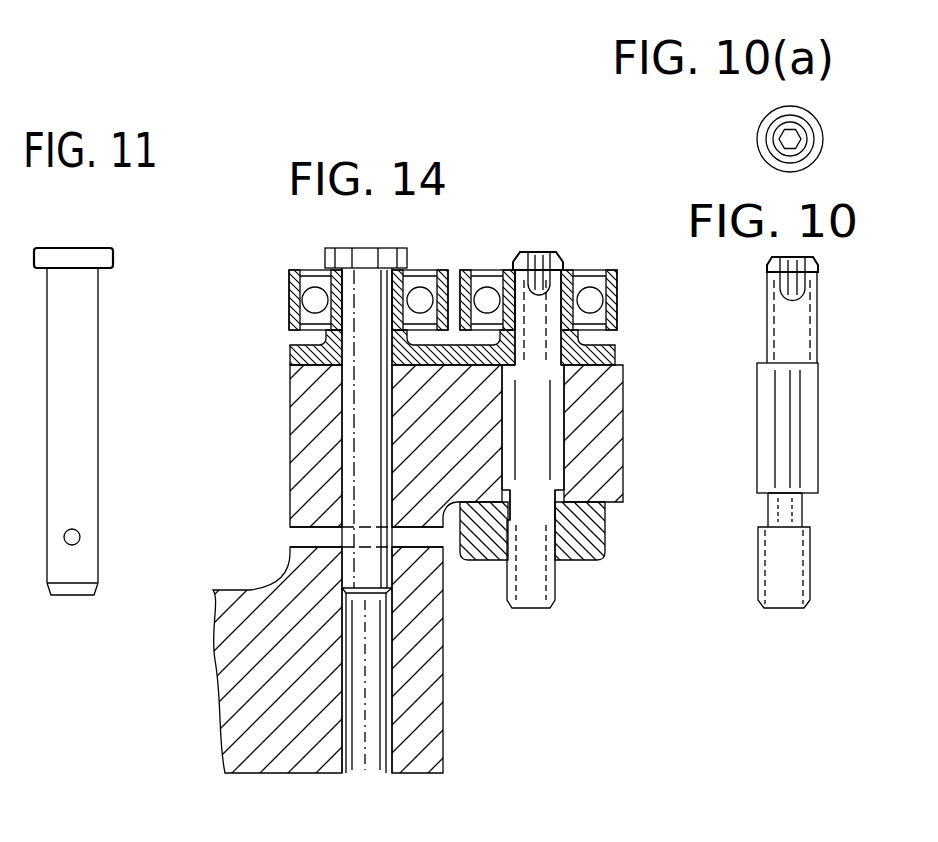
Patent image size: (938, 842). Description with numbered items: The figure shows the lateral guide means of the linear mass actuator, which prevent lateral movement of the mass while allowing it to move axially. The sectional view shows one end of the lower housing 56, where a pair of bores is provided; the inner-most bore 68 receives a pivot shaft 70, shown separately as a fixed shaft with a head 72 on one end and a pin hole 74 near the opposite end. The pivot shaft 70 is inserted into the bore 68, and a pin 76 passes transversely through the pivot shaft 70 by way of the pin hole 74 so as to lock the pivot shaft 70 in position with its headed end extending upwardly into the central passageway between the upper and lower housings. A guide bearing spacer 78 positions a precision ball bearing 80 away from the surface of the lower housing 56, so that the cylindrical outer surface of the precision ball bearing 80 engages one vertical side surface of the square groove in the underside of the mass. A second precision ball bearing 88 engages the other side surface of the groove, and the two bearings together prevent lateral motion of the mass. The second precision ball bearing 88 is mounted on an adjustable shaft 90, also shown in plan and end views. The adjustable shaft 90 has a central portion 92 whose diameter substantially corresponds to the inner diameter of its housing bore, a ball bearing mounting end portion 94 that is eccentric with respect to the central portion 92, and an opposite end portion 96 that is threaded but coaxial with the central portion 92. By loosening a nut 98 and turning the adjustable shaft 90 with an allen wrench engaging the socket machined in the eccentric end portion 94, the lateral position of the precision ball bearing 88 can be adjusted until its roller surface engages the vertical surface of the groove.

In FIG. 14, the lower housing 56 is at (625, 370).
In FIG. 14, the inner-most bore 68 is at (380, 674).
In FIG. 14, the pivot shaft 70 is at (342, 464).
In FIG. 11, the pivot shaft 70 is at (98, 372).
In FIG. 11, the head 72 is at (90, 248).
In FIG. 11, the pin hole 74 is at (80, 537).
In FIG. 14, the pin 76 is at (290, 538).
In FIG. 14, the guide bearing spacer 78 is at (290, 352).
In FIG. 14, the precision ball bearing 80 is at (289, 298).
In FIG. 14, the second precision ball bearing 88 is at (615, 320).
In FIG. 14, the adjustable shaft 90 is at (566, 440).
In FIG. 10, the adjustable shaft 90 is at (818, 425).
In FIG. 10, the central portion 92 is at (818, 485).
In FIG. 10, the ball bearing mounting end portion 94 is at (815, 328).
In FIG. 10, the threaded end portion 96 is at (810, 590).
In FIG. 14, the nut 98 is at (606, 534).